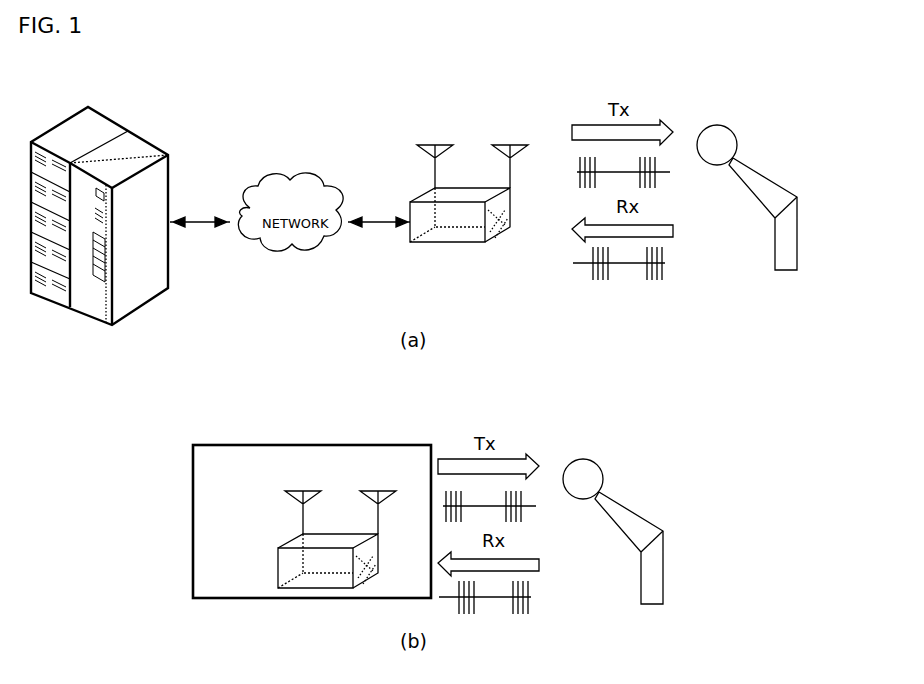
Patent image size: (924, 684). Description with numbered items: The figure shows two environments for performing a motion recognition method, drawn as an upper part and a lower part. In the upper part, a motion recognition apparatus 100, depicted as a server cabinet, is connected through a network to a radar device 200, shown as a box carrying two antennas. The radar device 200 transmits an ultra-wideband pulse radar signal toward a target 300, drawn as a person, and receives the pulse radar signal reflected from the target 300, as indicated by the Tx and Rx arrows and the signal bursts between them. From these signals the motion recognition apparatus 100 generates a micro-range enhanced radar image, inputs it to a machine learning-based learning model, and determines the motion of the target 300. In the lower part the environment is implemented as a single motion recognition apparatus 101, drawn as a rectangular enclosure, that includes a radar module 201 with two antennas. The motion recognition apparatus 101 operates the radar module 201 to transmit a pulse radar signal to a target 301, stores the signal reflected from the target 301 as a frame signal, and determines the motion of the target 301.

The motion recognition apparatus 100 is at (59, 126).
The radar device 200 is at (505, 222).
The target 300 is at (767, 172).
The motion recognition apparatus 101 is at (381, 446).
The radar module 201 is at (351, 539).
The target 301 is at (621, 531).